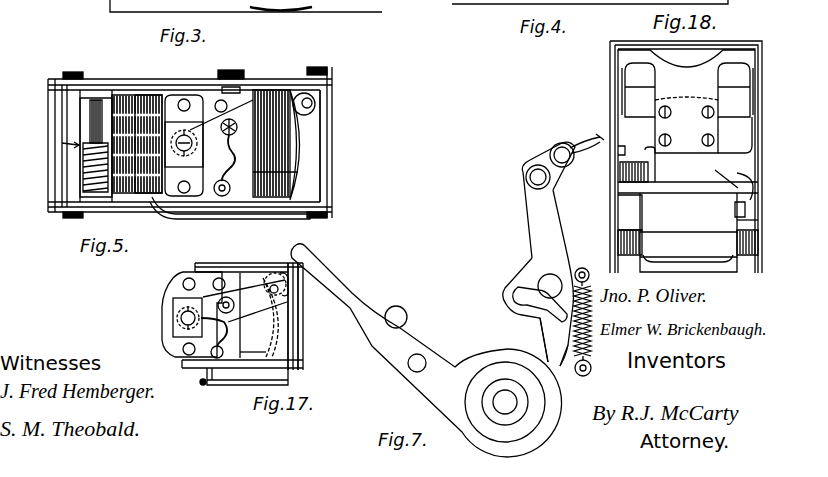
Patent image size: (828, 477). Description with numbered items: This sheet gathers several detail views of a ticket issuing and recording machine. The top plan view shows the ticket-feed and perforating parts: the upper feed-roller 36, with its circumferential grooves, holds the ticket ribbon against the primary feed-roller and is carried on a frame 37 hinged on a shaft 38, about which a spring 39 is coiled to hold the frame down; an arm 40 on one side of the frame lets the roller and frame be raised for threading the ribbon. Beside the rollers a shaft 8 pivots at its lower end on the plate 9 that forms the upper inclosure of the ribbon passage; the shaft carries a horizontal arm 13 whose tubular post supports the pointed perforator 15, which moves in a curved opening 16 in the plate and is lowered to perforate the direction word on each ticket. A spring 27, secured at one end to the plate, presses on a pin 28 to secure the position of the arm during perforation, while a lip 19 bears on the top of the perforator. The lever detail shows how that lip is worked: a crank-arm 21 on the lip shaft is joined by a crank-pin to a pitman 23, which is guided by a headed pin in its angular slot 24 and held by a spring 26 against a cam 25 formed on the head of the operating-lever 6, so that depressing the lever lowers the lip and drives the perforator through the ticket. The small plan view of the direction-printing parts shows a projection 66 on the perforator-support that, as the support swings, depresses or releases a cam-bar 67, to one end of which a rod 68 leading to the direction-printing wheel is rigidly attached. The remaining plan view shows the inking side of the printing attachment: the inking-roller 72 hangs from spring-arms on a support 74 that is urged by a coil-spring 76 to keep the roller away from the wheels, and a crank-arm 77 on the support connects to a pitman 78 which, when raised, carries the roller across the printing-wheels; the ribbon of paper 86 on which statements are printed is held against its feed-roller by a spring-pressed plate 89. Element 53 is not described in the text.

In FIG. 7, the operating-lever 6 is at (362, 301).
In FIG. 5, the shaft 8 is at (188, 141).
In FIG. 17, the shaft 8 is at (180, 315).
In FIG. 5, the plate 9 is at (313, 146).
In FIG. 17, the plate 9 is at (299, 357).
In FIG. 5, the horizontal arm 13 is at (256, 134).
In FIG. 17, the horizontal arm 13 is at (214, 332).
In FIG. 5, the perforator 15 is at (318, 112).
In FIG. 5, the curved opening 16 is at (298, 148).
In FIG. 17, the curved opening 16 is at (277, 323).
In FIG. 5, the lip 19 is at (298, 172).
In FIG. 17, the lip 19 is at (262, 353).
In FIG. 7, the lip 19 is at (592, 137).
In FIG. 5, the crank-arm 21 is at (222, 107).
In FIG. 17, the crank-arm 21 is at (217, 278).
In FIG. 7, the crank-arm 21 is at (538, 167).
In FIG. 5, the pitman 23 is at (224, 70).
In FIG. 7, the pitman 23 is at (548, 200).
In FIG. 7, the angular slot 24 is at (523, 293).
In FIG. 7, the cam 25 is at (550, 365).
In FIG. 7, the spring 26 is at (586, 272).
In FIG. 5, the spring 27 is at (213, 181).
In FIG. 17, the spring 27 is at (178, 337).
In FIG. 5, the pin 28 is at (231, 120).
In FIG. 17, the pin 28 is at (218, 303).
In FIG. 5, the upper feed-roller 36 is at (156, 94).
In FIG. 5, the frame 37 is at (113, 93).
In FIG. 5, the shaft 38 is at (86, 118).
In FIG. 5, the spring 39 is at (84, 165).
In FIG. 5, the arm 40 is at (238, 222).
In FIG. 7, the roller 53 is at (403, 306).
In FIG. 17, the projection 66 is at (283, 277).
In FIG. 17, the cam-bar 67 is at (291, 307).
In FIG. 17, the rod 68 is at (204, 385).
In FIG. 18, the inking-roller 72 is at (632, 95).
In FIG. 18, the support 74 is at (723, 153).
In FIG. 18, the coil-spring 76 is at (620, 177).
In FIG. 18, the crank-arm 77 is at (721, 181).
In FIG. 18, the pitman 78 is at (734, 203).
In FIG. 18, the ribbon of paper 86 is at (688, 212).
In FIG. 18, the spring-pressed plate 89 is at (688, 251).